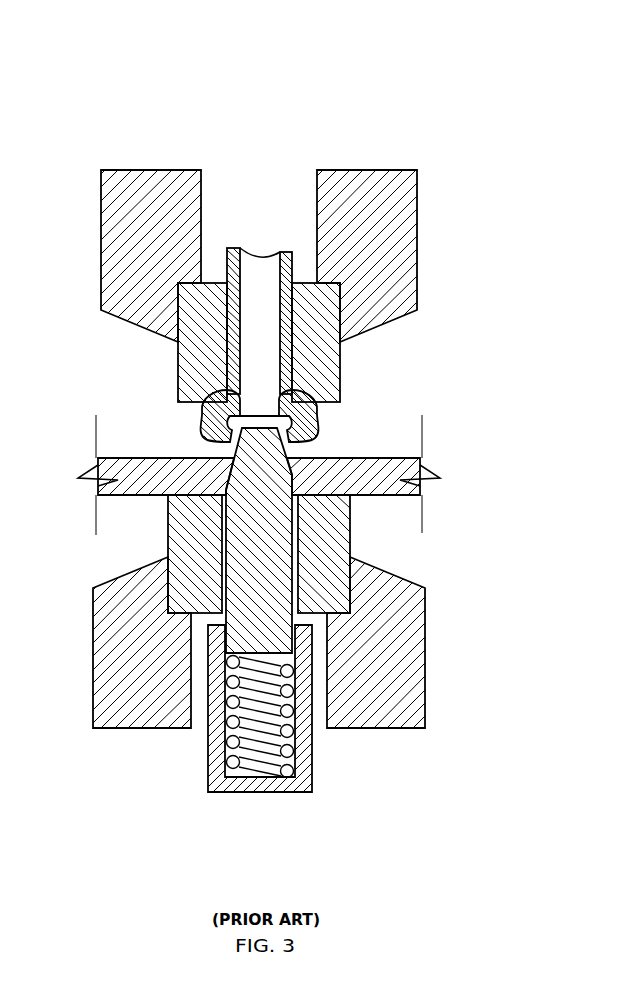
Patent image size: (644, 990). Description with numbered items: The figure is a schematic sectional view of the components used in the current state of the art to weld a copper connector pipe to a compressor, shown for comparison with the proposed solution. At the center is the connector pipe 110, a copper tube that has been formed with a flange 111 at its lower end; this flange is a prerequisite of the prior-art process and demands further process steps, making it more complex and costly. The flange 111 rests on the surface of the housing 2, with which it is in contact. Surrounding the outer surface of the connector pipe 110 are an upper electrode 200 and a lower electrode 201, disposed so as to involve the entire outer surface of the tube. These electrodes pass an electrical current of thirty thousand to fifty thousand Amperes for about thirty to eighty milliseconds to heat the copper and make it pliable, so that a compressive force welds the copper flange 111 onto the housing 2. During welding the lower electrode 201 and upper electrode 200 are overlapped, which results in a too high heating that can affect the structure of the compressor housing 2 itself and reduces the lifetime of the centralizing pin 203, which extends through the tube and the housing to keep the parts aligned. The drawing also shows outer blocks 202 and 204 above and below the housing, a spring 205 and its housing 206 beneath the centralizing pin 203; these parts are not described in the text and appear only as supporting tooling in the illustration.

The housing 2 is at (163, 458).
The connector pipe 110 is at (262, 285).
The flange 111 is at (315, 420).
The upper electrode 200 is at (340, 350).
The lower electrode 201 is at (345, 533).
The upper outer die block 202 is at (373, 185).
The centralizing pin 203 is at (245, 523).
The lower outer die block 204 is at (113, 702).
The spring 205 is at (287, 732).
The spring housing 206 is at (222, 750).